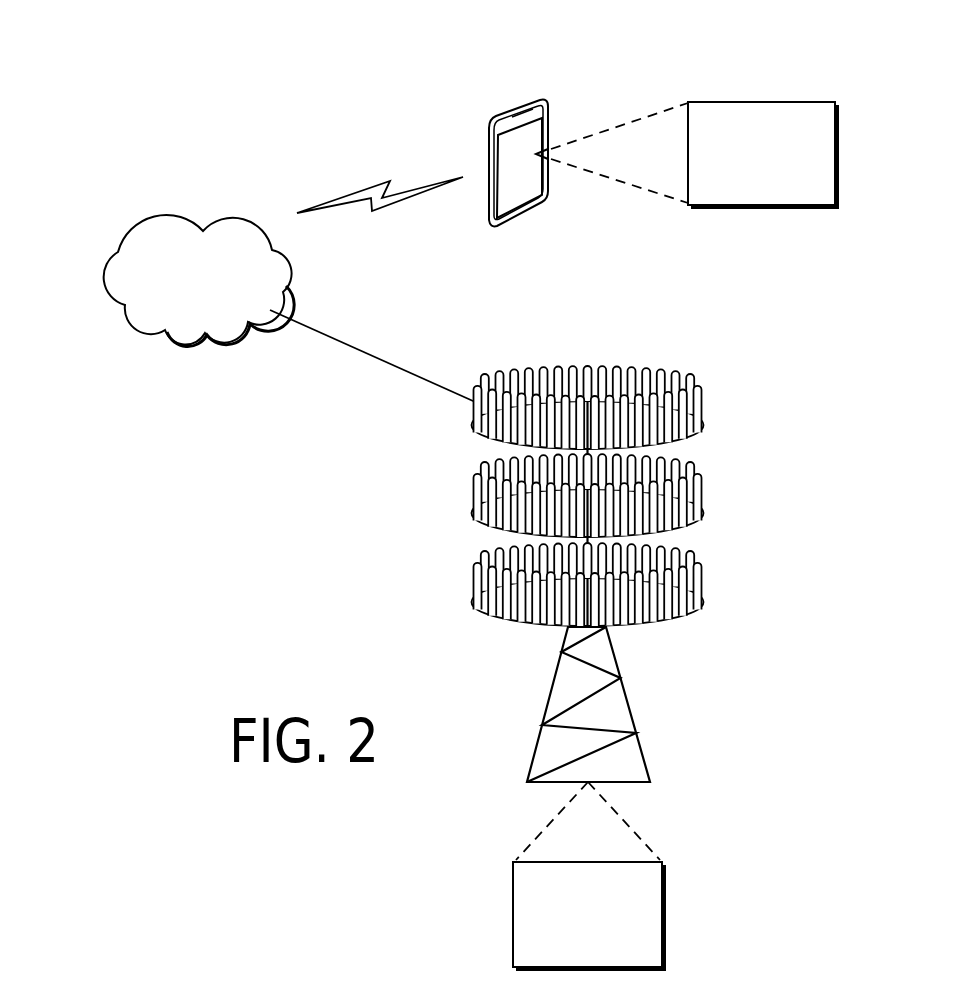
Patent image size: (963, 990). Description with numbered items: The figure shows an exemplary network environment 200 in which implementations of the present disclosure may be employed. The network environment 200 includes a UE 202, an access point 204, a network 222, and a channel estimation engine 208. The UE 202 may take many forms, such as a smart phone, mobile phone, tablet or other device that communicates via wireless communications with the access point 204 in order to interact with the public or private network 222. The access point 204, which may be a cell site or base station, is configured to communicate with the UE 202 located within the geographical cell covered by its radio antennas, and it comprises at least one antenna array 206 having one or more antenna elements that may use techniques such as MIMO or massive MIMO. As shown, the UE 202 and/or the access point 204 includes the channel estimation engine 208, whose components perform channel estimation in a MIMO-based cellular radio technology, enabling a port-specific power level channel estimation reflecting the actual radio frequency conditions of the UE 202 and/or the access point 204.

The network environment 200 is at (97, 82).
The UE 202 is at (516, 108).
The access point 204 is at (627, 700).
The antenna array 206 is at (607, 365).
The channel estimation engine 208 is at (760, 101).
The network 222 is at (179, 216).